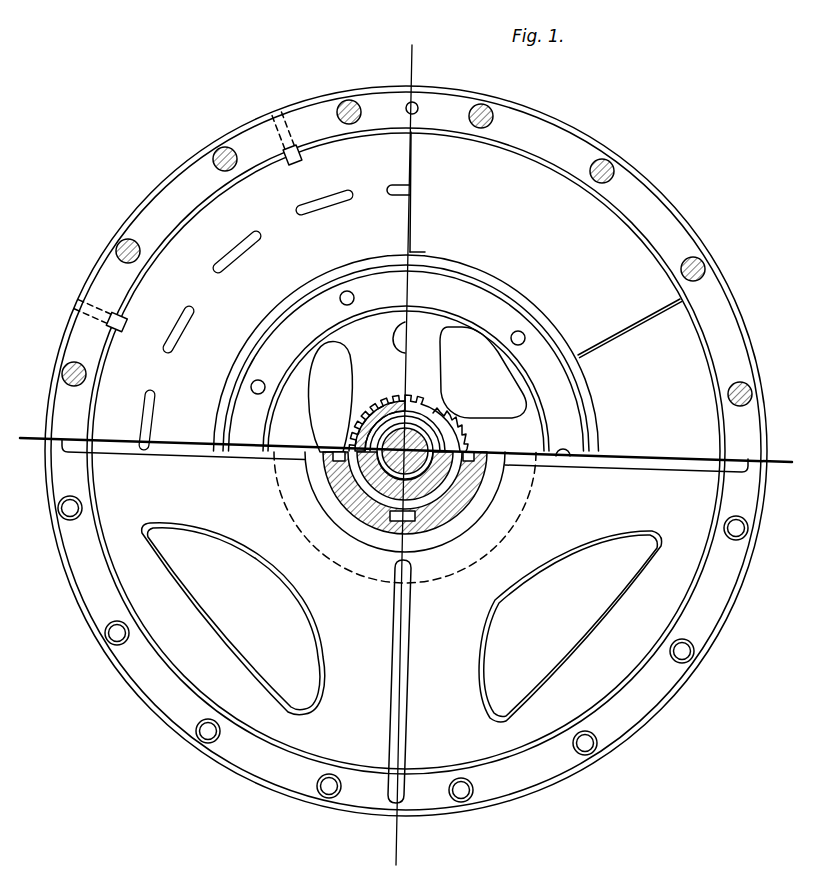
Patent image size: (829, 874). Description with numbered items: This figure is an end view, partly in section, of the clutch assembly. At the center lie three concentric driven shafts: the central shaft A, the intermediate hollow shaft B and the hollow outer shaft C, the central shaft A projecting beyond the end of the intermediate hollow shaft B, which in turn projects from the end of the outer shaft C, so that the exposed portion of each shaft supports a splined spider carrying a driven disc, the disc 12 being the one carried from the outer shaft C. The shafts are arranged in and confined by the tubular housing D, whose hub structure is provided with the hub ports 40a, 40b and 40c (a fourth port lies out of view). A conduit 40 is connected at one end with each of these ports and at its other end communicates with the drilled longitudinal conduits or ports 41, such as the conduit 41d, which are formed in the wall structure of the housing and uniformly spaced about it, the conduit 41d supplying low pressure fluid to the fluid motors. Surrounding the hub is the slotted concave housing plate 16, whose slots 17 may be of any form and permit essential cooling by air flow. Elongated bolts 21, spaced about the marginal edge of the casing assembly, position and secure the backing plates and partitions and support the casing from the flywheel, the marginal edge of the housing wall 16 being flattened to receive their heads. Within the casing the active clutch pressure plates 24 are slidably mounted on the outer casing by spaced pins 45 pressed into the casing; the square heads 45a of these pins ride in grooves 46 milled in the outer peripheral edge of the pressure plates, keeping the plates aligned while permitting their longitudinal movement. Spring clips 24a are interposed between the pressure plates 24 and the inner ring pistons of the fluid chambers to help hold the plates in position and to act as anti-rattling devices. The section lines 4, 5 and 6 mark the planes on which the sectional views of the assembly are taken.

The driven disc 12 is at (620, 243).
The slotted concave housing plate 16 is at (292, 738).
The slots 17 is at (402, 622).
The elongated bolts 21 is at (213, 160).
The active clutch pressure plates 24 is at (160, 283).
The spring clips 24a is at (258, 237).
The conduits 40 is at (220, 455).
The hub port 40a is at (420, 525).
The hub port 40b is at (500, 472).
The hub port 40c is at (300, 482).
The drilled longitudinal conduits 41 is at (412, 796).
The drilled longitudinal conduit 41d is at (418, 103).
The pins 45 is at (277, 108).
The square heads 45a is at (302, 154).
The grooves 46 is at (294, 166).
The central shaft A is at (448, 422).
The intermediate hollow shaft B is at (420, 405).
The hollow outer shaft C is at (358, 362).
The tubular housing D is at (378, 540).
The section line 4 is at (406, 83).
The section line 5 is at (24, 430).
The section line 6 is at (676, 452).